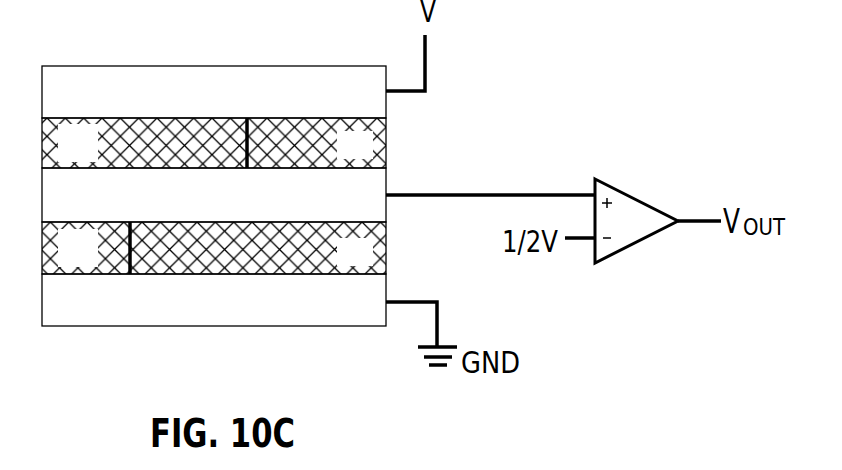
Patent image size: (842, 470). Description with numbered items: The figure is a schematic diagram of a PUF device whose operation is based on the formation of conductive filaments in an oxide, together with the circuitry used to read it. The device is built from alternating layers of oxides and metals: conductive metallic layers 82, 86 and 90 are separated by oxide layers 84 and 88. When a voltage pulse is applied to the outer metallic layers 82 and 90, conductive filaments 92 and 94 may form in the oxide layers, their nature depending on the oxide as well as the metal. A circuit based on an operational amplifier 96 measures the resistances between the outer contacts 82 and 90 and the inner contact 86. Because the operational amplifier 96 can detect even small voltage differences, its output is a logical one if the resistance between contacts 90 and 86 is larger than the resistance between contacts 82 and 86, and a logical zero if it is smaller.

The conductive metallic layer 82 is at (92, 104).
The oxide layer 84 is at (92, 152).
The conductive metallic layer 86 is at (92, 211).
The oxide layer 88 is at (92, 259).
The conductive metallic layer 90 is at (92, 311).
The conductive filament 92 is at (244, 137).
The conductive filament 94 is at (133, 248).
The operational amplifier 96 is at (647, 234).